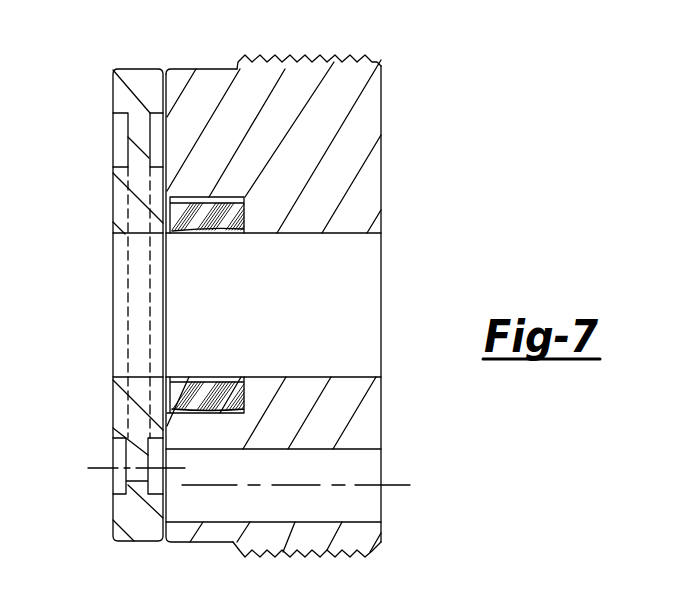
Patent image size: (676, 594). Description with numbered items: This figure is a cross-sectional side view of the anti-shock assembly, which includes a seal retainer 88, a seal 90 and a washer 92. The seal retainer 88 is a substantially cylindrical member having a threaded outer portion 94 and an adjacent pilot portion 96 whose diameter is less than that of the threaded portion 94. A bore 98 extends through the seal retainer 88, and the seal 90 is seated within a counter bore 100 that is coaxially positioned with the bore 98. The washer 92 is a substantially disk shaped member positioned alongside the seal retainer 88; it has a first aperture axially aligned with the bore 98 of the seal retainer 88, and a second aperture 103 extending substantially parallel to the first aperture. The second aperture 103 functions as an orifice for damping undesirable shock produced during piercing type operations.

The seal retainer 88 is at (368, 63).
The seal 90 is at (220, 390).
The washer 92 is at (120, 99).
The threaded outer portion 94 is at (302, 58).
The pilot portion 96 is at (205, 69).
The bore 98 is at (362, 233).
The counter bore 100 is at (220, 198).
The second aperture 103 is at (134, 476).